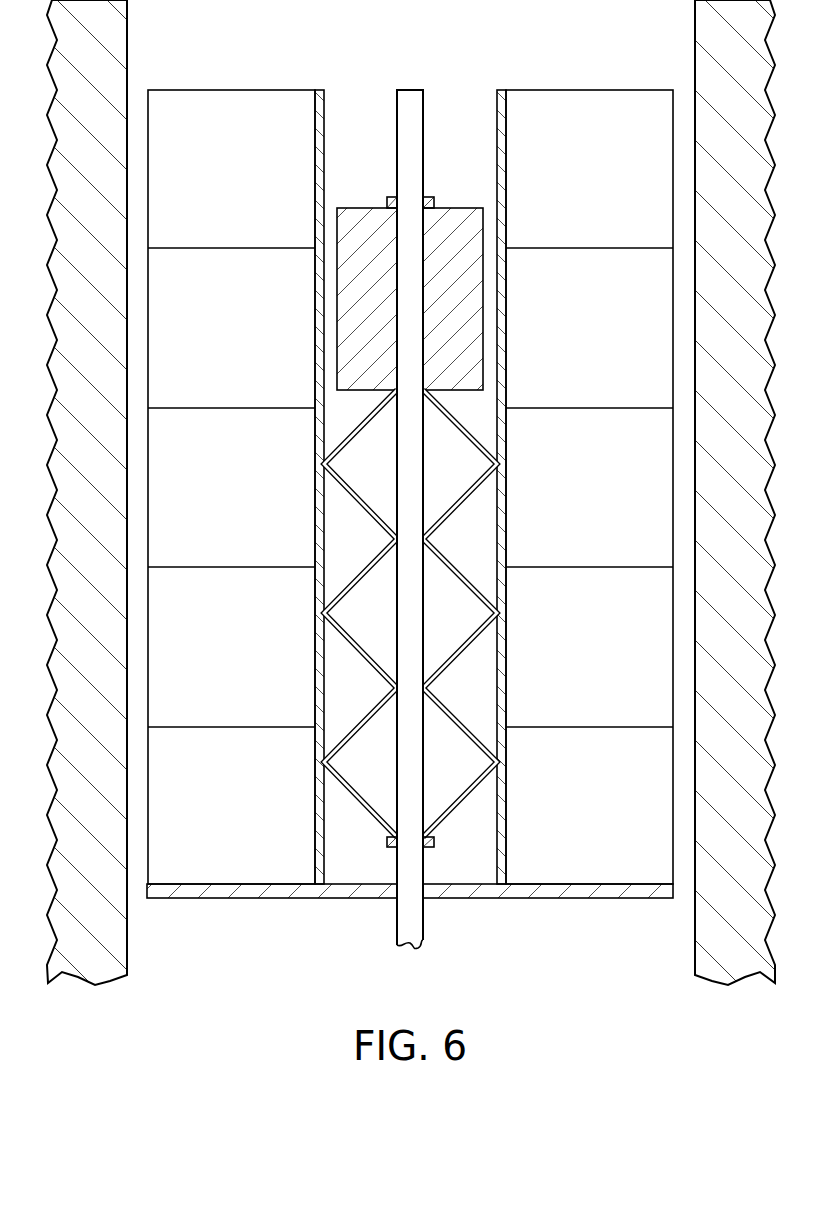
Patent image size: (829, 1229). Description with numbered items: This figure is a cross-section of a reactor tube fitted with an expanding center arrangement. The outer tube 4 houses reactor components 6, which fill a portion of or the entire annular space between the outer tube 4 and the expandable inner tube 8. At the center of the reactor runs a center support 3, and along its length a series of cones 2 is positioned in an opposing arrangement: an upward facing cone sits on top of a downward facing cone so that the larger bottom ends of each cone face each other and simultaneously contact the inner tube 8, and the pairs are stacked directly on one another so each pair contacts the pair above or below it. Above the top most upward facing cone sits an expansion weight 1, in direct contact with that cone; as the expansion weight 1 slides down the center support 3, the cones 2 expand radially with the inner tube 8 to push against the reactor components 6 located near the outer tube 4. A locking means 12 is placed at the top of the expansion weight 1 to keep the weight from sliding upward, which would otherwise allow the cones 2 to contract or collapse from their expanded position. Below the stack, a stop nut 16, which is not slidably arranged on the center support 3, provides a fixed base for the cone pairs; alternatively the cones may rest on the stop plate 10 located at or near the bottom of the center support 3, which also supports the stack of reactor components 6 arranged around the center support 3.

The expansion weight 1 is at (355, 323).
The cones 2 is at (380, 408).
The center support 3 is at (415, 103).
The outer tube 4 is at (127, 58).
The reactor components 6 is at (245, 489).
The expandable inner tube 8 is at (500, 125).
The stop plate 10 is at (582, 898).
The locking means 12 is at (428, 195).
The stop nut 16 is at (433, 847).